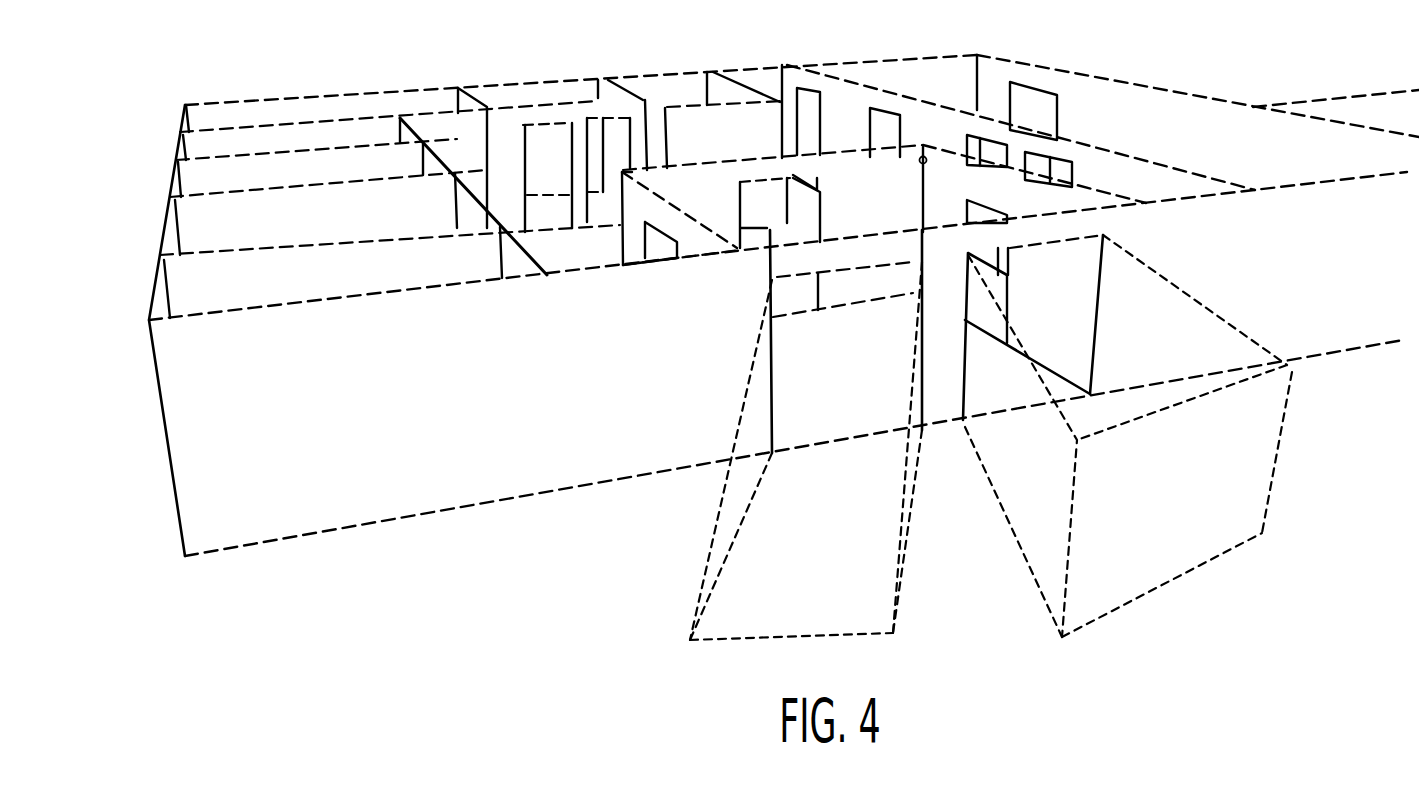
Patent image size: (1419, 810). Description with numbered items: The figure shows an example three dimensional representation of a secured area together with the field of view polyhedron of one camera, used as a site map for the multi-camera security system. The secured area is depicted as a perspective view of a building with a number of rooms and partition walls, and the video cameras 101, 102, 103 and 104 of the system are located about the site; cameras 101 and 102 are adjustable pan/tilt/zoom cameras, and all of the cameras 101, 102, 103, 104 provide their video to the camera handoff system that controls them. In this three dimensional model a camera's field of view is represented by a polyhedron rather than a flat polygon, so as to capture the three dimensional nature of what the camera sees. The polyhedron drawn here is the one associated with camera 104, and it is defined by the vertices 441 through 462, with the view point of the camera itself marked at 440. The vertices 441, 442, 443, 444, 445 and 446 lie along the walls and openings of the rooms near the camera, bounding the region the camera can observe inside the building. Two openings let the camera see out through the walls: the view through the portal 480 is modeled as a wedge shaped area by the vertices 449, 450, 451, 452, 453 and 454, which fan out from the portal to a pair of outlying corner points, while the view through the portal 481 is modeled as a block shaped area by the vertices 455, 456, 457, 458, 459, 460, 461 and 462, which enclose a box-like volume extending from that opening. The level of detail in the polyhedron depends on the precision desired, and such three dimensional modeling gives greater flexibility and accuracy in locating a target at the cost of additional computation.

The video camera 101 is at (484, 88).
The video camera 102 is at (418, 130).
The video camera 103 is at (1173, 197).
The video camera 104 is at (927, 160).
The reference point 440 is at (919, 162).
The vertex 441 is at (923, 147).
The vertex 442 is at (632, 173).
The vertex 443 is at (744, 250).
The vertex 444 is at (1117, 207).
The vertex 445 is at (1088, 394).
The vertex 446 is at (921, 296).
The vertex 449 is at (775, 452).
The vertex 450 is at (690, 640).
The vertex 451 is at (772, 280).
The vertex 452 is at (920, 240).
The vertex 453 is at (893, 633).
The vertex 454 is at (921, 433).
The vertex 455 is at (968, 428).
The vertex 456 is at (968, 253).
The vertex 457 is at (1076, 445).
The vertex 458 is at (1062, 637).
The vertex 459 is at (1262, 533).
The vertex 460 is at (1293, 373).
The vertex 461 is at (1098, 240).
The vertex 462 is at (1090, 396).
The portal 480 is at (830, 368).
The portal 481 is at (1070, 291).